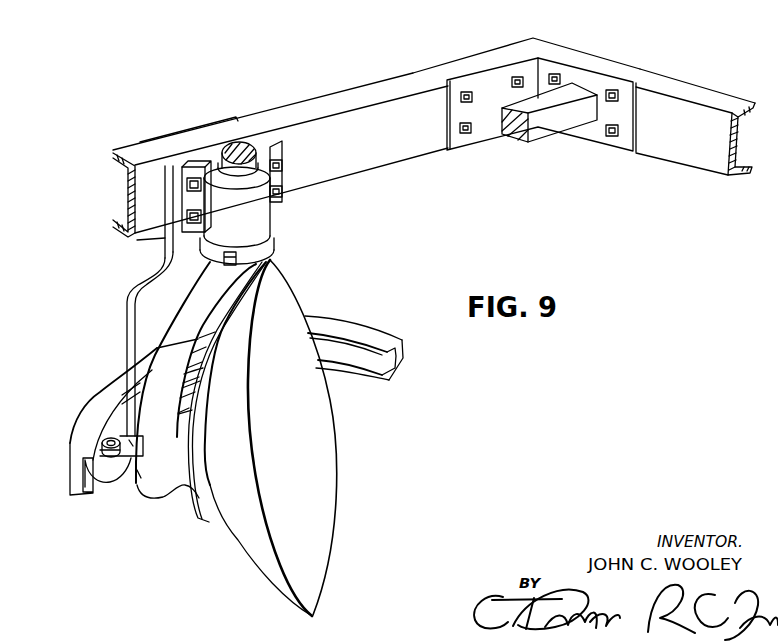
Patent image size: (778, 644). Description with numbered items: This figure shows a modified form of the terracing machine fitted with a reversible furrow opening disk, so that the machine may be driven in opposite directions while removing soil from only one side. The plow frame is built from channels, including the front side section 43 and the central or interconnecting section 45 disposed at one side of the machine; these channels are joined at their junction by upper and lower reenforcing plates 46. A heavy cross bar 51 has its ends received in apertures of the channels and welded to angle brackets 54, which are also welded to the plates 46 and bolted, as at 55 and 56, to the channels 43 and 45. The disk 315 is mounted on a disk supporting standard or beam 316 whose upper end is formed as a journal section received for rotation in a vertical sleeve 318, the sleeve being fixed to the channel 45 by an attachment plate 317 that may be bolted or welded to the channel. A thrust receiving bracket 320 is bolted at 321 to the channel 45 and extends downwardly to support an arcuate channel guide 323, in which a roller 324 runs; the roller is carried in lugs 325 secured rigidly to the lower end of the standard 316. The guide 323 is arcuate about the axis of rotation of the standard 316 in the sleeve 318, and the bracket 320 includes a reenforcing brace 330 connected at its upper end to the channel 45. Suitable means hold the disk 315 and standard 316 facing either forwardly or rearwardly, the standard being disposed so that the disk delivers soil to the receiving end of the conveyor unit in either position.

The front side section 43 is at (697, 93).
The central or interconnecting section 45 is at (336, 103).
The reenforcing plates 46 is at (497, 55).
The cross bar 51 is at (540, 128).
The angle brackets 54 is at (491, 75).
The bolts 55 is at (608, 89).
The bolts 56 is at (512, 89).
The disk 315 is at (325, 508).
The disk supporting standard or beam 316 is at (168, 327).
The attachment plate 317 is at (195, 164).
The vertical sleeve 318 is at (258, 218).
The thrust receiving bracket 320 is at (130, 283).
The bolts 321 is at (186, 215).
The arcuate channel guide 323 is at (95, 392).
The roller 324 is at (112, 470).
The lugs 325 is at (140, 475).
The reenforcing brace 330 is at (148, 246).